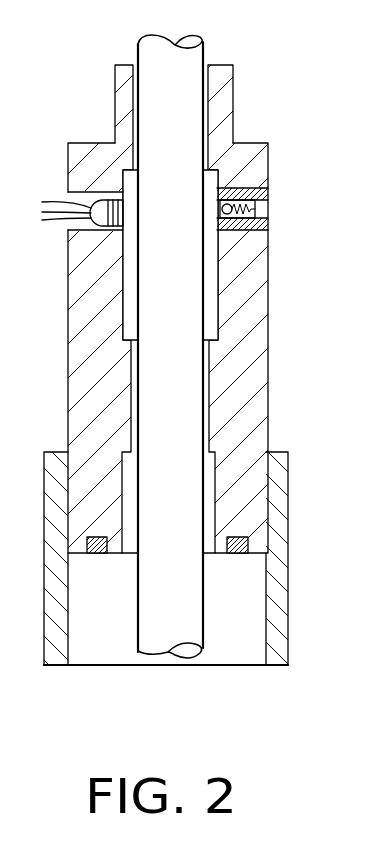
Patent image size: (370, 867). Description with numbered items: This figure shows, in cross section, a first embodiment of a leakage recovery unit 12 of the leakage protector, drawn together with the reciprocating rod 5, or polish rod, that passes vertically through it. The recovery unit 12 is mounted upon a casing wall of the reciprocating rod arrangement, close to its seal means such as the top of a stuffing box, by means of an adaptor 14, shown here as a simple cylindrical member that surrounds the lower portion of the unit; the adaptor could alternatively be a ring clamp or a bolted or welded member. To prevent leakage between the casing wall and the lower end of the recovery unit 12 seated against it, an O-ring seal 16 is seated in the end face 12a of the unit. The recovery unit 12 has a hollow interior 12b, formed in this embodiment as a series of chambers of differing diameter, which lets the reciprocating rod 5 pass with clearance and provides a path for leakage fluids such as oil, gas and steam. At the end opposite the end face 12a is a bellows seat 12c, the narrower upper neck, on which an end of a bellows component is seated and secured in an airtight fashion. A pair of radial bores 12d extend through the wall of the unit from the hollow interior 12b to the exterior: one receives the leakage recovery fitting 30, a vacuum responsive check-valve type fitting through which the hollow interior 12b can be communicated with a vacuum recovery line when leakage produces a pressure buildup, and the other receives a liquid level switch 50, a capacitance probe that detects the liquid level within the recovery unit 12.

The reciprocating rod 5 is at (178, 265).
The leakage recovery unit 12 is at (271, 380).
The end face 12a is at (250, 557).
The hollow interior 12b is at (128, 280).
The bellows seat 12c is at (234, 99).
The radial bore 12d is at (72, 192).
The adaptor 14 is at (289, 530).
The O-ring seal 16 is at (97, 556).
The leakage recovery fitting 30 is at (271, 192).
The liquid level switch 50 is at (90, 220).